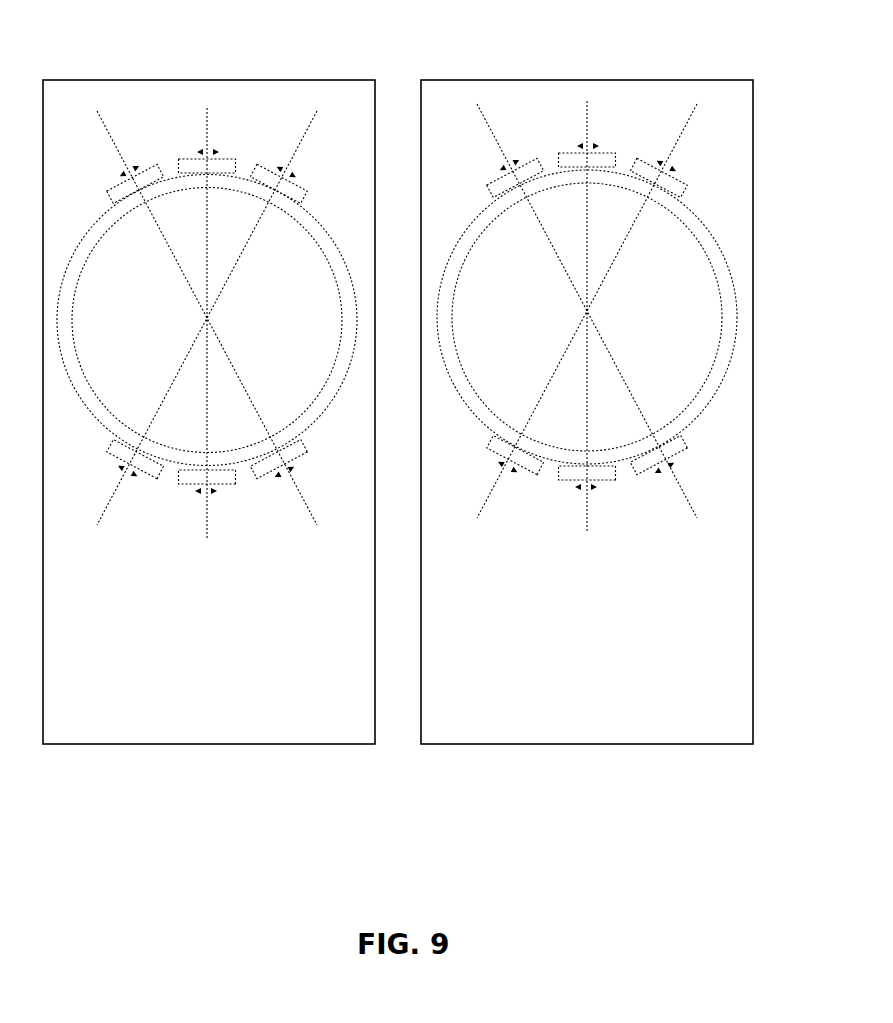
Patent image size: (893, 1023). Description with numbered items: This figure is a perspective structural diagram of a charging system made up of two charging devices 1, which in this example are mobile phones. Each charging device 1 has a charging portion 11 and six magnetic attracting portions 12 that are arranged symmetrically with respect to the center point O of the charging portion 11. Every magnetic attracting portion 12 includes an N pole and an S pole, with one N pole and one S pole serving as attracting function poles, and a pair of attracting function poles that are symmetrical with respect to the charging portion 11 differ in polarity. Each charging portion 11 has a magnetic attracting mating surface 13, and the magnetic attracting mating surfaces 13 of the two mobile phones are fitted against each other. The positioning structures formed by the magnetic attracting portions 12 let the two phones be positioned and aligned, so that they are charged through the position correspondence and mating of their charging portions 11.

The charging device 1 is at (398, 432).
The charging portion 11 is at (313, 245).
The magnetic attracting portion 12 is at (268, 175).
The magnetic attracting mating surface 13 is at (112, 650).